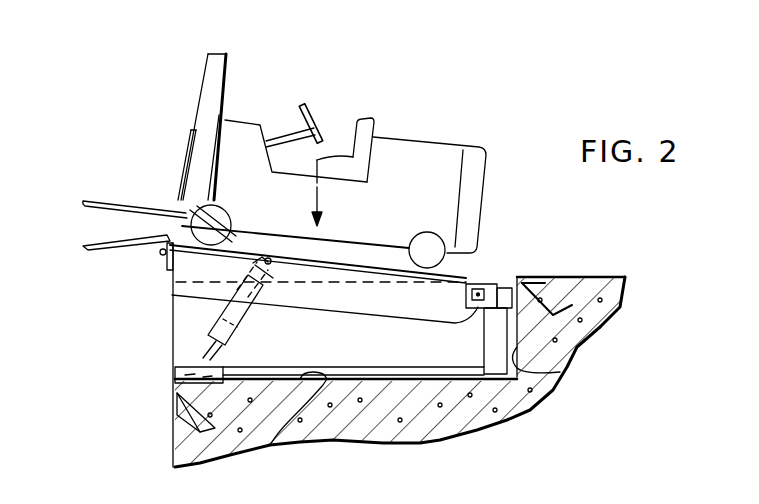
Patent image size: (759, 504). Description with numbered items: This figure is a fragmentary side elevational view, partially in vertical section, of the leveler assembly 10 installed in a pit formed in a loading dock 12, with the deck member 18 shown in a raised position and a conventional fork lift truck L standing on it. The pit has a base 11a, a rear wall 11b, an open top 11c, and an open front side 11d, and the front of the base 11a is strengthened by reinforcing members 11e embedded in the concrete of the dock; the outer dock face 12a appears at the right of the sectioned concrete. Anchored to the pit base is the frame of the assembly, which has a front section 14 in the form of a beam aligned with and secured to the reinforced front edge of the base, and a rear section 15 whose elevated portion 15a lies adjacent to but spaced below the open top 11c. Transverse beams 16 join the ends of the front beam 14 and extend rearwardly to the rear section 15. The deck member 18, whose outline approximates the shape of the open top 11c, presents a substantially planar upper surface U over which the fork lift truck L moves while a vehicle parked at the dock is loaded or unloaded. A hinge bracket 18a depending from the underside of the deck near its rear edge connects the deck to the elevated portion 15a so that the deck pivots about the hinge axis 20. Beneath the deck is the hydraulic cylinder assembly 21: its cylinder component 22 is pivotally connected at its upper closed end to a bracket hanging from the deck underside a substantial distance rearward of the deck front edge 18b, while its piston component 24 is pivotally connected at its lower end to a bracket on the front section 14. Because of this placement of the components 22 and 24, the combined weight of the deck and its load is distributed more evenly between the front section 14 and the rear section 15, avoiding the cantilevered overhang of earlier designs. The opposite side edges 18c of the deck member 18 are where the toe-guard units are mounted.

The leveler assembly 10 is at (95, 230).
The base 11a is at (278, 445).
The rear wall 11b is at (523, 372).
The open top 11c is at (155, 268).
The open front side 11d is at (173, 333).
The reinforcing members 11e is at (175, 448).
The loading dock 12 is at (163, 431).
The dock face 12a is at (590, 270).
The front section 14 is at (171, 382).
The rear section 15 is at (607, 281).
The elevated portion 15a is at (523, 282).
The transverse beams 16 is at (372, 363).
The deck member 18 is at (350, 250).
The hinge bracket 18a is at (470, 288).
The front edge 18b is at (83, 247).
The side edges 18c is at (308, 267).
The hinge axis 20 is at (491, 290).
The hydraulic cylinder assembly 21 is at (203, 315).
The cylinder component 22 is at (246, 322).
The piston component 24 is at (205, 357).
The fork lift truck L is at (180, 149).
The upper surface U is at (163, 190).